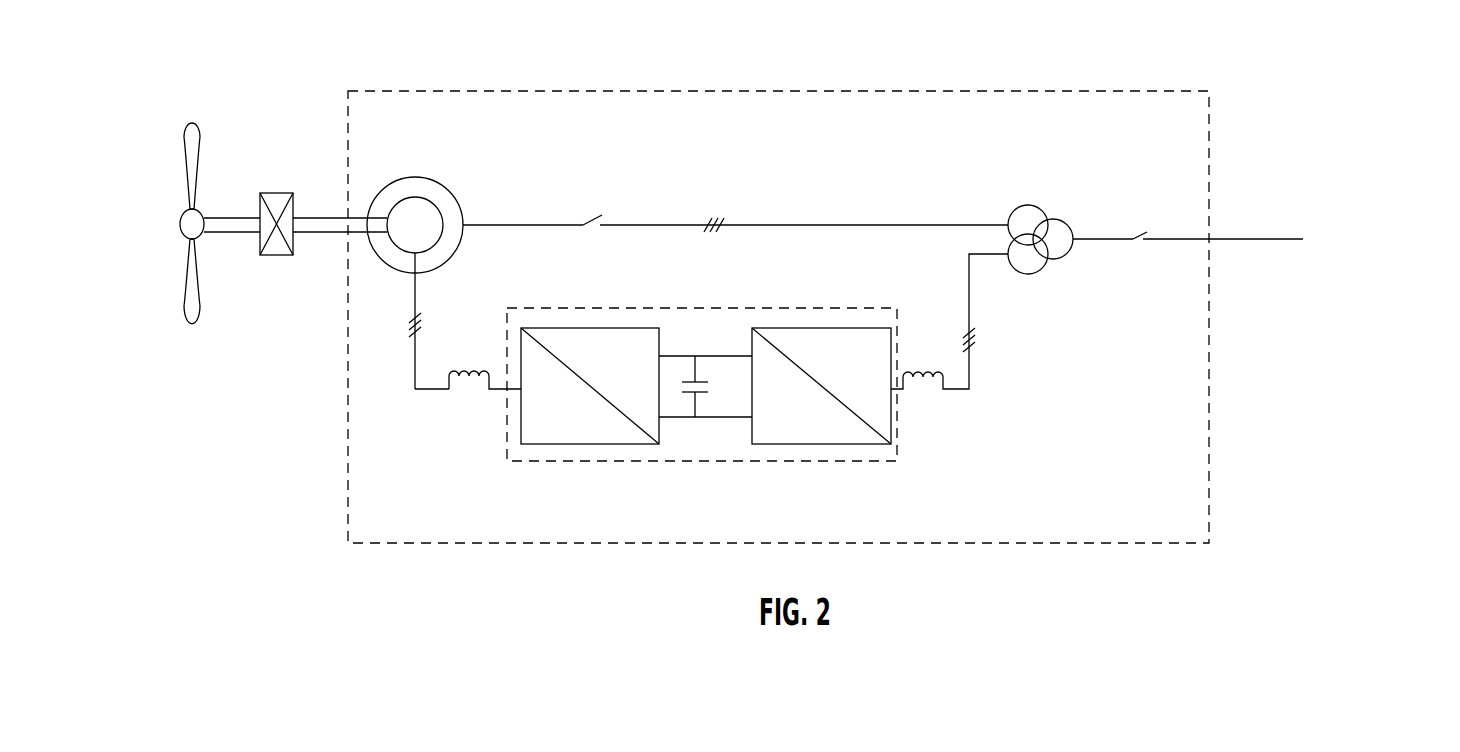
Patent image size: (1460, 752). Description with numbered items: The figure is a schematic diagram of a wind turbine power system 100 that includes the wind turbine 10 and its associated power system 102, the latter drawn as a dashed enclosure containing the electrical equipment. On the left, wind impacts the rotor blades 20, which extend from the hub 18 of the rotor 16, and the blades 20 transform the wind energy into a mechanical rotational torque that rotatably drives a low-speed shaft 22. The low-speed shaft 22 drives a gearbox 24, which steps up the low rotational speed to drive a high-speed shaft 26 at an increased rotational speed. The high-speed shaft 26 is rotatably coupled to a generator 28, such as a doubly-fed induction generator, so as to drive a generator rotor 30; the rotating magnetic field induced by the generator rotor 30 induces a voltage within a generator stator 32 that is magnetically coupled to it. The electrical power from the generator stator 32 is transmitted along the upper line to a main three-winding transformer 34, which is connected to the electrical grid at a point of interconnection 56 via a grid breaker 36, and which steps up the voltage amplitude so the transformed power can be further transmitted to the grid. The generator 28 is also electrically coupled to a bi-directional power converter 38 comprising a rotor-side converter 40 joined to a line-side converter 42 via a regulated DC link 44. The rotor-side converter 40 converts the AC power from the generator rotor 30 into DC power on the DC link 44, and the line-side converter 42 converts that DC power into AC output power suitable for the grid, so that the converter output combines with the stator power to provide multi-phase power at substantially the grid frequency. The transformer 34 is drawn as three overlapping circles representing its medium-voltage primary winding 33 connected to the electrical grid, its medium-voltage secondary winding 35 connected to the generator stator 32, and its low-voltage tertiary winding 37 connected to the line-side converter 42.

The wind turbine 10 is at (207, 77).
The wind turbine power system 100 is at (1280, 82).
The power system 102 is at (782, 82).
The rotor 16 is at (166, 235).
The rotatable hub 18 is at (180, 226).
The rotor blades 20 is at (188, 160).
The low-speed shaft 22 is at (218, 235).
The gearbox 24 is at (277, 192).
The high-speed shaft 26 is at (305, 234).
The generator 28 is at (415, 163).
The generator rotor 30 is at (440, 203).
The generator stator 32 is at (400, 272).
The primary winding 33 is at (1073, 250).
The main three-winding transformer 34 is at (1037, 231).
The secondary winding 35 is at (1008, 210).
The grid breaker 36 is at (1150, 231).
The tertiary winding 37 is at (1028, 275).
The bi-directional power converter 38 is at (722, 307).
The rotor-side converter 40 is at (575, 446).
The line-side converter 42 is at (830, 446).
The DC link 44 is at (713, 395).
The point of interconnection 56 is at (1285, 255).